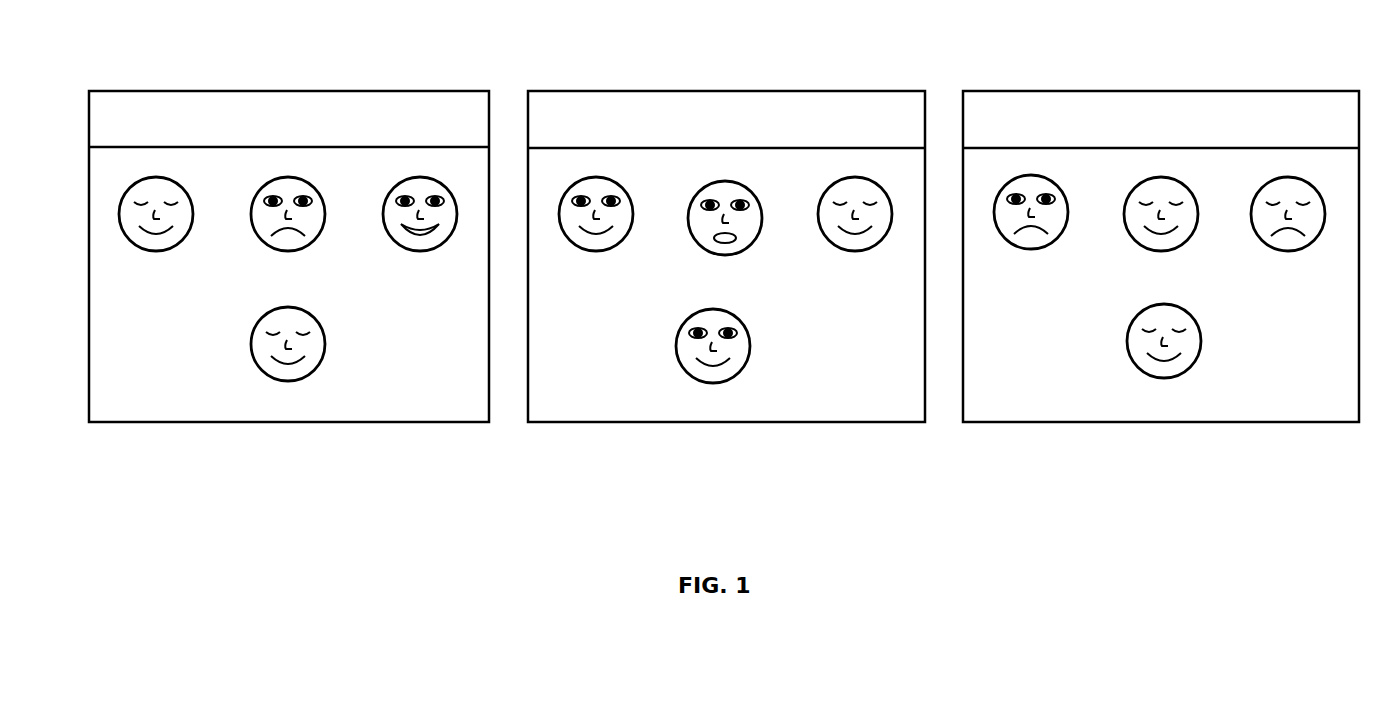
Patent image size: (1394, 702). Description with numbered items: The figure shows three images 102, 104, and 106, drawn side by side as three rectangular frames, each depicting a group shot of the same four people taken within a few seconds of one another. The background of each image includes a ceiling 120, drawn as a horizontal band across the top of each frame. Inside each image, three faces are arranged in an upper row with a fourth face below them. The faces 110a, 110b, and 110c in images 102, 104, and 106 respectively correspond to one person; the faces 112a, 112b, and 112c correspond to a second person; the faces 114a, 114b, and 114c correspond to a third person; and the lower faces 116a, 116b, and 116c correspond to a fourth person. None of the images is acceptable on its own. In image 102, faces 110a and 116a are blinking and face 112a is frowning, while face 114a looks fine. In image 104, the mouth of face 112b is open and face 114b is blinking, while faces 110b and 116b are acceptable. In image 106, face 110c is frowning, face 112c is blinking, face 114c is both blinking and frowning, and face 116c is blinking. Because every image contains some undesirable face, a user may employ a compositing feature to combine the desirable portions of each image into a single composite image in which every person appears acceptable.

The image 102 is at (205, 422).
The image 104 is at (644, 422).
The image 106 is at (1079, 422).
The ceiling 120 is at (125, 147).
The face 110a is at (156, 177).
The face 112a is at (288, 177).
The face 114a is at (420, 177).
The face 116a is at (288, 382).
The face 110b is at (596, 177).
The face 112b is at (725, 181).
The face 114b is at (855, 177).
The face 116b is at (713, 384).
The face 110c is at (1031, 175).
The face 112c is at (1161, 177).
The face 114c is at (1288, 177).
The face 116c is at (1164, 379).